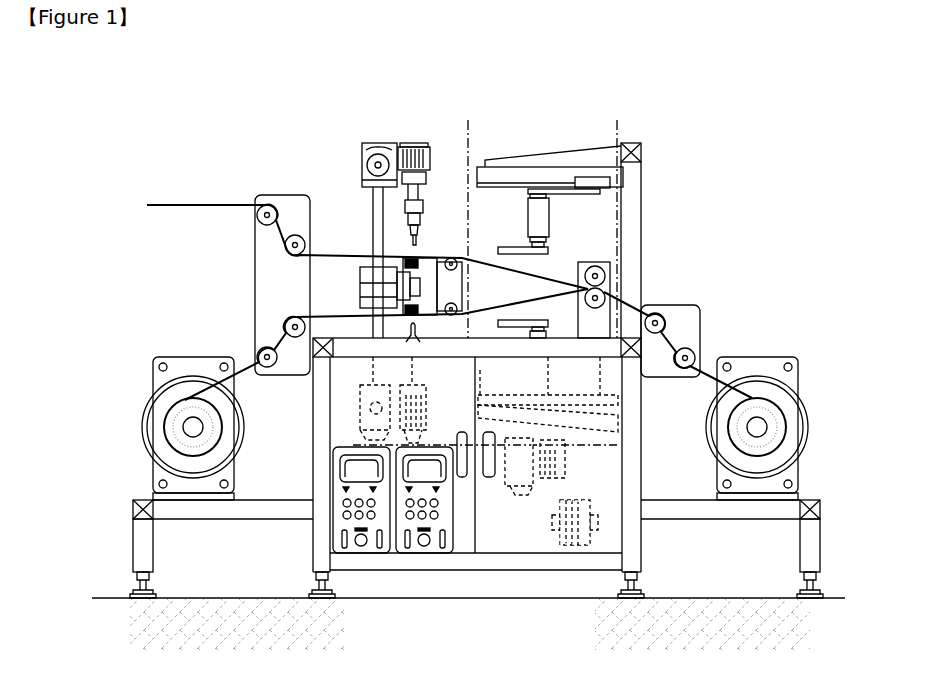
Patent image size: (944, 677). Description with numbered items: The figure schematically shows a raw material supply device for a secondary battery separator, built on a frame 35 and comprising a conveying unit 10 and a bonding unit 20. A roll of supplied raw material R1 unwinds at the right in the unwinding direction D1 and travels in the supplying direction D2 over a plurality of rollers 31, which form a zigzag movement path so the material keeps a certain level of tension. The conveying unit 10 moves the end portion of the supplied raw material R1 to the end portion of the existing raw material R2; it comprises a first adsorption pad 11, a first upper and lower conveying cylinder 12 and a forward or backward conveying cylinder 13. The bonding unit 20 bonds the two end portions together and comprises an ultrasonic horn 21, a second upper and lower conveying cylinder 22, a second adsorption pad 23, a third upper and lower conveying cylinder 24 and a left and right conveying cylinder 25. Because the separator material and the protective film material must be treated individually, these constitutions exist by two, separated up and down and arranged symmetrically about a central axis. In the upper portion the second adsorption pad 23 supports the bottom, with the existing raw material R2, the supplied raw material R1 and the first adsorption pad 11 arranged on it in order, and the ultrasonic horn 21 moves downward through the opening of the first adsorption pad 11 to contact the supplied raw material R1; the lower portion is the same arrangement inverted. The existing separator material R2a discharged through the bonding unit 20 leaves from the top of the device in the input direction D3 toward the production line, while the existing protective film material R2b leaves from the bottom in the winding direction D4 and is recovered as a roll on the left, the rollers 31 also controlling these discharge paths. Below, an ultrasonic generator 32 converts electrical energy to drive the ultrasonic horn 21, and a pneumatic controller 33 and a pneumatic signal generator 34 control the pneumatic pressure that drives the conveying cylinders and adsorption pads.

The conveying unit 10 is at (522, 124).
The first adsorption pad 11 is at (547, 248).
The first upper and lower conveying cylinder 12 is at (540, 208).
The forward or backward conveying cylinder 13 is at (570, 167).
The bonding unit 20 is at (413, 118).
The ultrasonic horn 21 is at (420, 193).
The second upper and lower conveying cylinder 22 is at (412, 147).
The second adsorption pad 23 is at (407, 256).
The third upper and lower conveying cylinder 24 is at (407, 285).
The left and right conveying cylinder 25 is at (373, 158).
The roller 31 is at (688, 352).
The ultrasonic generator 32 is at (375, 545).
The pneumatic controller 33 is at (548, 483).
The pneumatic signal generator 34 is at (587, 533).
The frame 35 is at (817, 538).
The supplied raw material R1 is at (627, 297).
The existing raw material R2 is at (68, 195).
The existing separator material R2a is at (147, 205).
The existing protective film material R2b is at (173, 398).
The unwinding direction of roll D1 is at (816, 405).
The supplying direction of supplied raw material D2 is at (740, 293).
The input direction of separator material to mass production line D3 is at (213, 190).
The winding direction of roll D4 is at (134, 405).